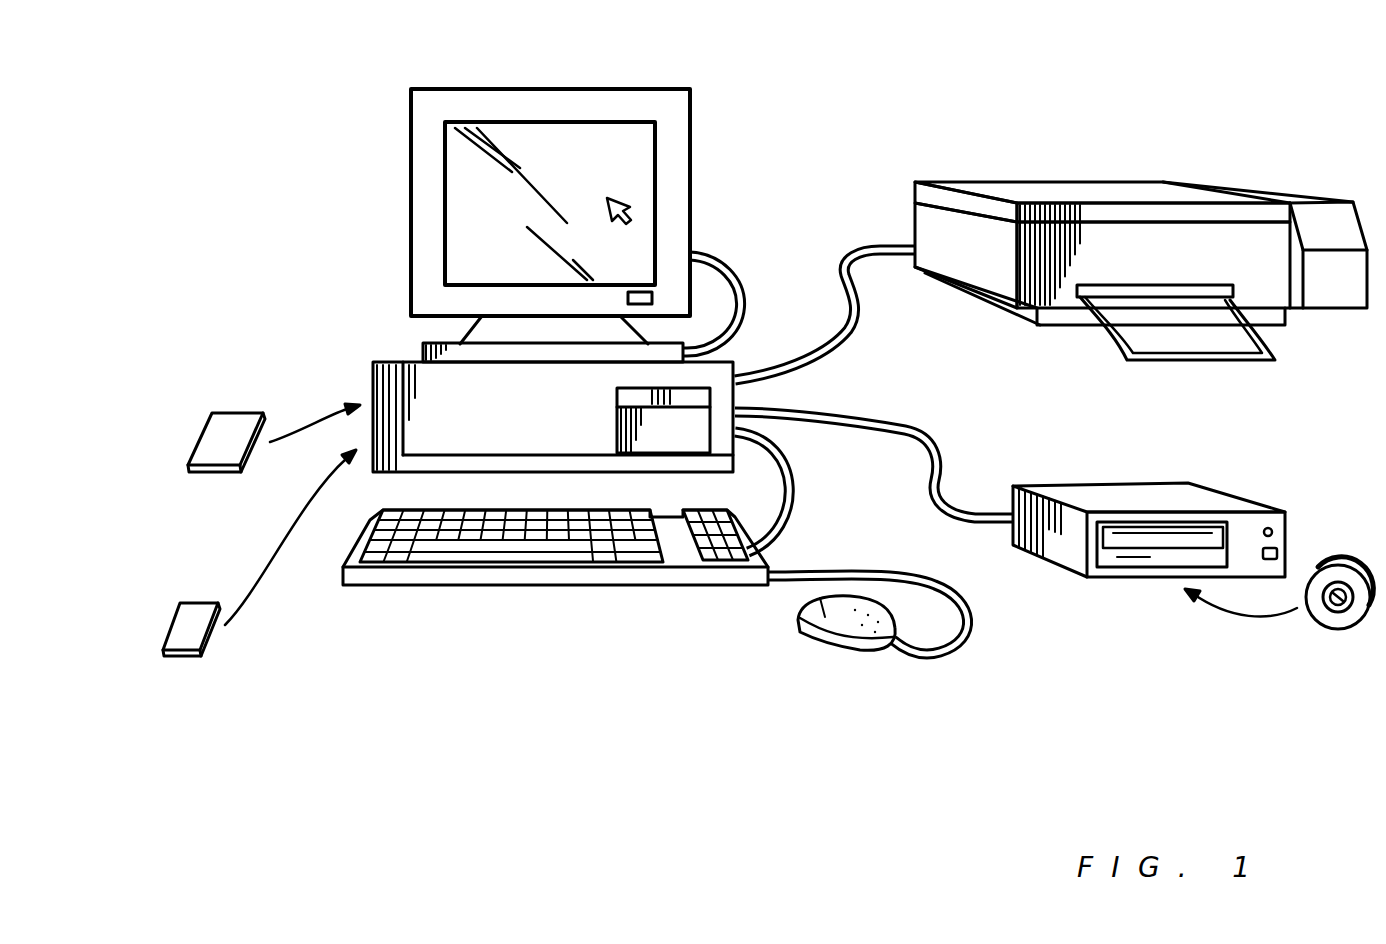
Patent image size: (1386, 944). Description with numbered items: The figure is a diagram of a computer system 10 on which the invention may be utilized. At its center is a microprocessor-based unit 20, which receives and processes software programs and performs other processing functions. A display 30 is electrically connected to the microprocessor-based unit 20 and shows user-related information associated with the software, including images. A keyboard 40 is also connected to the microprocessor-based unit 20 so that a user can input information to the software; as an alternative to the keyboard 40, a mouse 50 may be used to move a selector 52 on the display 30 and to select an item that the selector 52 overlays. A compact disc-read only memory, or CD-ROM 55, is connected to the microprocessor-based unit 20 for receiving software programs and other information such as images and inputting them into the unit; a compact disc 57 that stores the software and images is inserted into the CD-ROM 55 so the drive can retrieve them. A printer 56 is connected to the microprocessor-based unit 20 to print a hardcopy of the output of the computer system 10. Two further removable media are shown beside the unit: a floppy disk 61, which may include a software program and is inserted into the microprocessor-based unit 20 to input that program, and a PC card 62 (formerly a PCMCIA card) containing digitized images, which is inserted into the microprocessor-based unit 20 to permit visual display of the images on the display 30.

The computer system 10 is at (846, 66).
The microprocessor-based unit 20 is at (393, 363).
The display 30 is at (572, 89).
The keyboard 40 is at (453, 586).
The mouse 50 is at (838, 645).
The selector 52 is at (625, 205).
The compact disc-read only memory (CD-ROM) 55 is at (1047, 482).
The printer 56 is at (993, 180).
The compact disc 57 is at (1325, 614).
The floppy disk 61 is at (208, 478).
The personal computer card (PC card) 62 is at (175, 620).